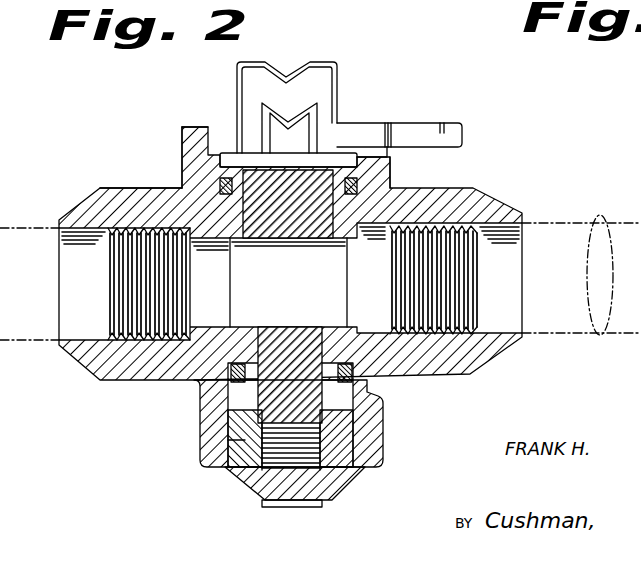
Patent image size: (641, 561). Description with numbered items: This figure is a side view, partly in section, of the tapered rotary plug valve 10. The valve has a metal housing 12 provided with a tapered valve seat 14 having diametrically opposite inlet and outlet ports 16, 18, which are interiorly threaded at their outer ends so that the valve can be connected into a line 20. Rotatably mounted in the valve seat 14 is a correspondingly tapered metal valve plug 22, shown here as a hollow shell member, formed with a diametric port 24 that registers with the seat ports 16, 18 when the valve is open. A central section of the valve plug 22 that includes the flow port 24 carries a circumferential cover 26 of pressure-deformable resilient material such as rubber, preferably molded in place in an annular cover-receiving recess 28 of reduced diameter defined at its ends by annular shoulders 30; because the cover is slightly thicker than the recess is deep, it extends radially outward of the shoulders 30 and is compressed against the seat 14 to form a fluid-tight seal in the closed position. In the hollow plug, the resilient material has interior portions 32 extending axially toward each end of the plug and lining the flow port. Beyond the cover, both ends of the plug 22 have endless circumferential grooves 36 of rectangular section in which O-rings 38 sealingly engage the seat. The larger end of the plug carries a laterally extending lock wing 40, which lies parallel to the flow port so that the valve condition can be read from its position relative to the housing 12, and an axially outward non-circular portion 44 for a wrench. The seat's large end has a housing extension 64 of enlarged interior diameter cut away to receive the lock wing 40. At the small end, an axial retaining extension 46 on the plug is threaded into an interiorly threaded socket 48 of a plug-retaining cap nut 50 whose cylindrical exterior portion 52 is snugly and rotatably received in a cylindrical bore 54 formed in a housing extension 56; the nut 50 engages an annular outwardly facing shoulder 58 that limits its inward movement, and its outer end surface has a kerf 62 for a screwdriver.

The tapered rotary plug valve 10 is at (500, 151).
The metal housing 12 is at (450, 188).
The tapered valve seat 14 is at (238, 325).
The inlet port 16 is at (75, 240).
The outlet port 18 is at (517, 243).
The line 20 is at (598, 232).
The valve plug 22 is at (222, 183).
The diametric port 24 is at (253, 238).
The circumferential cover 26 is at (330, 240).
The annular cover-receiving recess 28 is at (400, 190).
The annular shoulders 30 is at (218, 222).
The interior portions of cover 32 is at (312, 170).
The circumferential grooves 36 is at (222, 200).
The O-rings 38 is at (222, 187).
The lock wing 40 is at (440, 124).
The non-circular portion 44 is at (318, 88).
The axial retaining extension 46 is at (272, 442).
The interiorly threaded socket 48 is at (268, 507).
The plug-retaining cap nut 50 is at (250, 483).
The cylindrical exterior portion 52 is at (226, 466).
The cylindrical bore 54 is at (347, 468).
The housing extension 56 is at (386, 447).
The annular outwardly facing shoulder 58 is at (227, 432).
The kerf 62 is at (307, 507).
The housing extension 64 is at (182, 136).